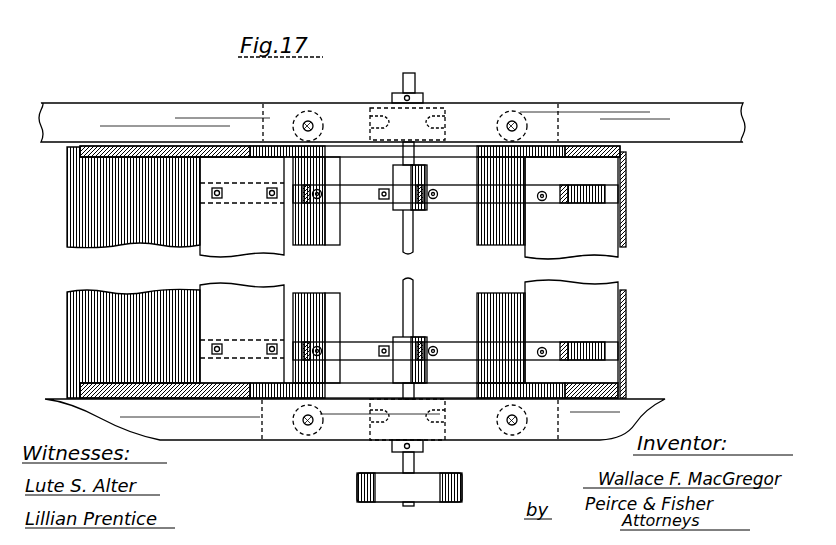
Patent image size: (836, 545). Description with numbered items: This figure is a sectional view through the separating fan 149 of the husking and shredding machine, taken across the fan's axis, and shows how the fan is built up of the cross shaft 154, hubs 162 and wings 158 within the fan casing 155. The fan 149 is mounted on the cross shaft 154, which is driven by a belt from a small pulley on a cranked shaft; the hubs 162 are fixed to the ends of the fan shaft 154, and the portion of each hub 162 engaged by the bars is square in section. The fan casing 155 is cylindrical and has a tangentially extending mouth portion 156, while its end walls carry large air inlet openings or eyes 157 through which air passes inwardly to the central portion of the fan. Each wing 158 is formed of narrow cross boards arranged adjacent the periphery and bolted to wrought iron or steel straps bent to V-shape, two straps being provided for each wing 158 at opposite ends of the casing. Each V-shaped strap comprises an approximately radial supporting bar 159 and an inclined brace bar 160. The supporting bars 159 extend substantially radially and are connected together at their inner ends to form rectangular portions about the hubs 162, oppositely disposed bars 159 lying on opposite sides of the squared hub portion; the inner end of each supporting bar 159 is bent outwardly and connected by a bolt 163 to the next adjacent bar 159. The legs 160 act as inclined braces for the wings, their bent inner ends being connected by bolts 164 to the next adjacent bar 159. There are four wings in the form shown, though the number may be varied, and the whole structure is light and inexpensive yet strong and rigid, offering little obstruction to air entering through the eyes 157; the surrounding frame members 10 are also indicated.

The frame beam 10 is at (656, 114).
The fan 149 is at (597, 272).
The cross shaft 154 is at (416, 78).
The fan casing 155 is at (626, 340).
The mouth portion 156 is at (93, 216).
The air inlet openings or eyes 157 is at (527, 153).
The wings 158 is at (409, 270).
The supporting bars 159 is at (358, 206).
The inclined brace bar 160 is at (311, 186).
The hub 162 is at (420, 240).
The bolt 163 is at (428, 192).
The bolts 164 is at (318, 200).